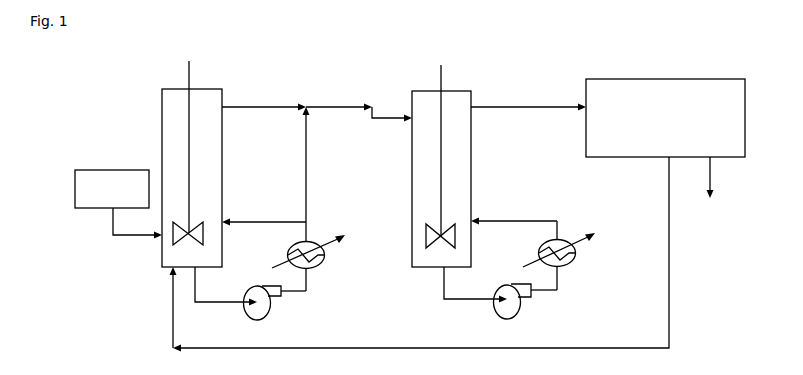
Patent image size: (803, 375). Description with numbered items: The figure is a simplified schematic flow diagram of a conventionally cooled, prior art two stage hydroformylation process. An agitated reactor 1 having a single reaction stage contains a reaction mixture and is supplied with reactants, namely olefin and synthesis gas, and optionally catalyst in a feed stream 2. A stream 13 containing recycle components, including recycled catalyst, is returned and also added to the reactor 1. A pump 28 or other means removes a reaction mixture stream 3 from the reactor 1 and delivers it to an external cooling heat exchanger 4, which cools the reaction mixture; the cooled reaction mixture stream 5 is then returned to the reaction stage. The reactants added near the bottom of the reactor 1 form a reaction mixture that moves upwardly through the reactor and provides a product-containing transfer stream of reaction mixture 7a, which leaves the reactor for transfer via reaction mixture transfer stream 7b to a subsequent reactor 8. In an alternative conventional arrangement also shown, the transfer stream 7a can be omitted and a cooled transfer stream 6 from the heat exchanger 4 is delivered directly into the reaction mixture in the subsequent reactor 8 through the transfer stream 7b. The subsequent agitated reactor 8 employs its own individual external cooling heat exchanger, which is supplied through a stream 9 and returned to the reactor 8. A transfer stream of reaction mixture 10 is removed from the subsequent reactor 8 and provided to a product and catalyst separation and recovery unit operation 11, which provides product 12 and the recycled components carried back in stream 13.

The agitated reactor 1 is at (181, 164).
The feed stream 2 is at (118, 217).
The reaction mixture stream 3 is at (226, 294).
The external cooling heat exchanger 4 is at (308, 263).
The cooled reaction mixture stream 5 is at (264, 215).
The cooled transfer stream 6 is at (313, 174).
The transfer stream of reaction mixture 7a is at (264, 98).
The reaction mixture transfer stream 7b is at (359, 105).
The subsequent reactor 8 is at (435, 166).
The stream 9 is at (470, 287).
The transfer stream of reaction mixture 10 is at (528, 97).
The product and catalyst separation and recovery unit operation 11 is at (665, 105).
The product 12 is at (729, 196).
The stream containing recycle components 13 is at (410, 254).
The pump 28 is at (275, 307).